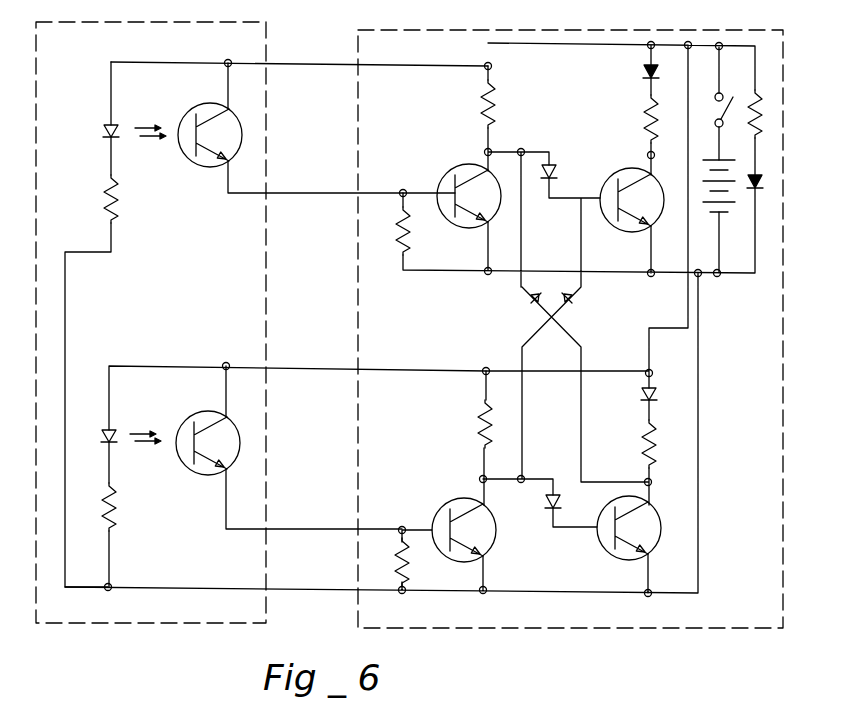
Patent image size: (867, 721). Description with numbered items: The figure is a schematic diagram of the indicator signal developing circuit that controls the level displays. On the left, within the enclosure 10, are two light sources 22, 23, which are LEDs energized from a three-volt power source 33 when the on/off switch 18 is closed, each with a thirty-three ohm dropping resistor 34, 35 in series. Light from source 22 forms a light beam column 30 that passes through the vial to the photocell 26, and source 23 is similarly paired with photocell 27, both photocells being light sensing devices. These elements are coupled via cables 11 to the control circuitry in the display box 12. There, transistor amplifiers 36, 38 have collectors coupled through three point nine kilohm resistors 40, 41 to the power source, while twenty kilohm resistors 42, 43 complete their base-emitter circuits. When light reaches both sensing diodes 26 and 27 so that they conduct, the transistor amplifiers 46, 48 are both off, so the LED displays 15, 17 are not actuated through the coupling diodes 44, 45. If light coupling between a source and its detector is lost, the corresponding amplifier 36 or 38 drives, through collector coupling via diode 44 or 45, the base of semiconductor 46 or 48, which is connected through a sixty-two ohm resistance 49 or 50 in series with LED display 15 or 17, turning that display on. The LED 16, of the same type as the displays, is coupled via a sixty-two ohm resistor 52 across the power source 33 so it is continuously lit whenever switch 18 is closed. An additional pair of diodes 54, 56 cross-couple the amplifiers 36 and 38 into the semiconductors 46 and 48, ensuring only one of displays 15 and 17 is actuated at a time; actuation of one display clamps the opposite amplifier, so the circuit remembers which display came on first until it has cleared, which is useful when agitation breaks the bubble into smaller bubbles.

The enclosure 10 is at (273, 33).
The cables 11 is at (313, 58).
The display box 12 is at (785, 48).
The LED display 15 is at (638, 70).
The LED 16 is at (765, 183).
The LED display 17 is at (662, 392).
The on/off switch 18 is at (712, 105).
The light source 22 is at (99, 86).
The light source 23 is at (108, 420).
The photocell 26 is at (200, 98).
The photocell 27 is at (201, 408).
The light beam column 30 is at (158, 140).
The power source 33 is at (732, 205).
The dropping resistor 34 is at (121, 187).
The dropping resistor 35 is at (113, 503).
The transistor amplifier 36 is at (458, 164).
The transistor amplifier 38 is at (440, 498).
The resistor 40 is at (482, 92).
The resistor 41 is at (480, 413).
The resistor 42 is at (412, 244).
The resistor 43 is at (400, 576).
The coupling diode 44 is at (557, 164).
The coupling diode 45 is at (559, 494).
The semiconductor 46 is at (628, 233).
The semiconductor 48 is at (662, 528).
The resistance 49 is at (645, 95).
The resistance 50 is at (645, 433).
The resistor 52 is at (765, 115).
The cross-coupling diode 54 is at (530, 300).
The cross-coupling diode 56 is at (572, 300).